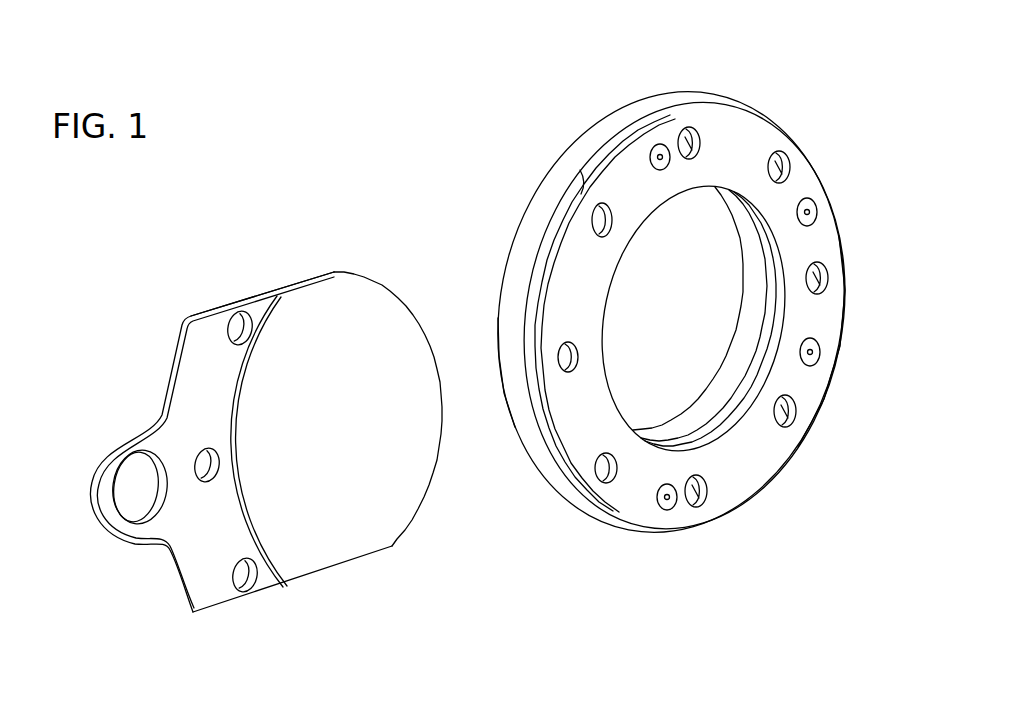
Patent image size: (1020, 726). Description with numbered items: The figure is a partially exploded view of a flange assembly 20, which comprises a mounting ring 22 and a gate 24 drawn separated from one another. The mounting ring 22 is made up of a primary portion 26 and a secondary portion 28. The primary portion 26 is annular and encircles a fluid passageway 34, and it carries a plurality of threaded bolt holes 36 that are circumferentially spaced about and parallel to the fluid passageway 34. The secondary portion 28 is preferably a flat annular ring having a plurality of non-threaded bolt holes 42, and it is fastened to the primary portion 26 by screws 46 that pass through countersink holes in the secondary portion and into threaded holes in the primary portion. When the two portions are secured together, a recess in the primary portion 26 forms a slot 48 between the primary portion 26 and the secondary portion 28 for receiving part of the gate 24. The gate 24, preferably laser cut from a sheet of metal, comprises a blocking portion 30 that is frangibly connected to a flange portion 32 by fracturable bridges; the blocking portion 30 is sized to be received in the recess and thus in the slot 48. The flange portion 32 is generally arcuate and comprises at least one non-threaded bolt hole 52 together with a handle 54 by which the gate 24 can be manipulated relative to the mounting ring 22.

The flange assembly 20 is at (428, 136).
The mounting ring 22 is at (614, 126).
The gate 24 is at (372, 513).
The primary portion 26 is at (516, 432).
The secondary portion 28 is at (759, 468).
The blocking portion 30 is at (353, 293).
The flange portion 32 is at (204, 598).
The fluid passageway 34 is at (688, 297).
The threaded bolt holes 36 is at (691, 132).
The non-threaded bolt holes 42 is at (599, 214).
The screws 46 is at (659, 146).
The slot 48 is at (540, 275).
The non-threaded bolt hole 52 is at (240, 320).
The handle 54 is at (104, 498).